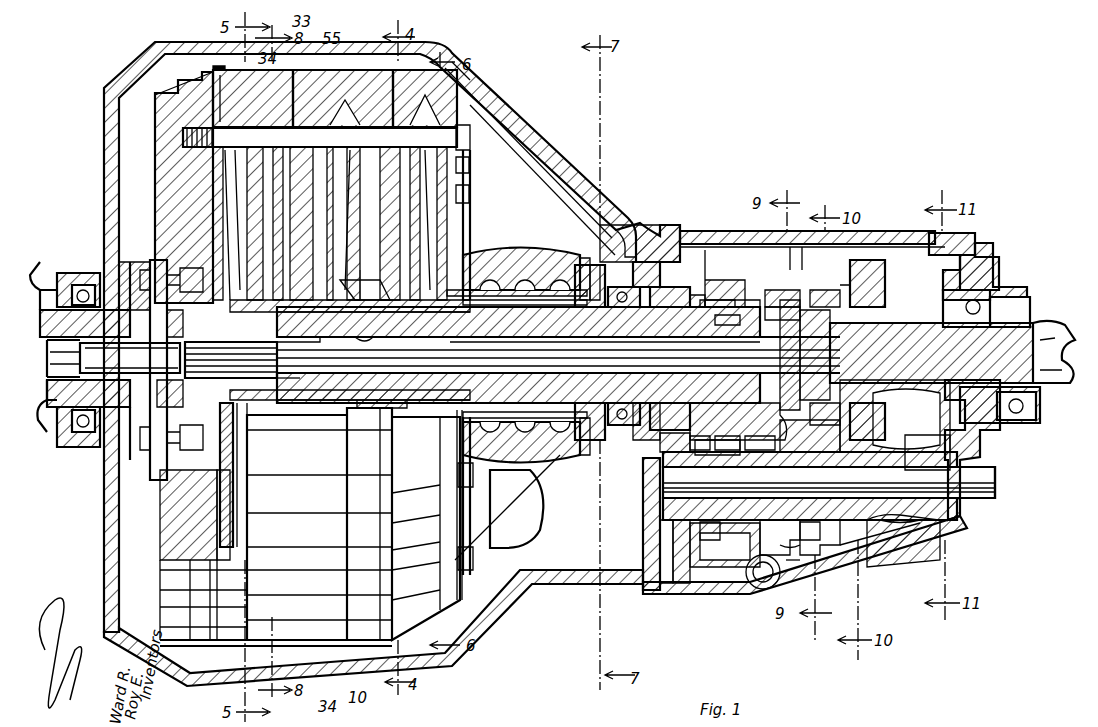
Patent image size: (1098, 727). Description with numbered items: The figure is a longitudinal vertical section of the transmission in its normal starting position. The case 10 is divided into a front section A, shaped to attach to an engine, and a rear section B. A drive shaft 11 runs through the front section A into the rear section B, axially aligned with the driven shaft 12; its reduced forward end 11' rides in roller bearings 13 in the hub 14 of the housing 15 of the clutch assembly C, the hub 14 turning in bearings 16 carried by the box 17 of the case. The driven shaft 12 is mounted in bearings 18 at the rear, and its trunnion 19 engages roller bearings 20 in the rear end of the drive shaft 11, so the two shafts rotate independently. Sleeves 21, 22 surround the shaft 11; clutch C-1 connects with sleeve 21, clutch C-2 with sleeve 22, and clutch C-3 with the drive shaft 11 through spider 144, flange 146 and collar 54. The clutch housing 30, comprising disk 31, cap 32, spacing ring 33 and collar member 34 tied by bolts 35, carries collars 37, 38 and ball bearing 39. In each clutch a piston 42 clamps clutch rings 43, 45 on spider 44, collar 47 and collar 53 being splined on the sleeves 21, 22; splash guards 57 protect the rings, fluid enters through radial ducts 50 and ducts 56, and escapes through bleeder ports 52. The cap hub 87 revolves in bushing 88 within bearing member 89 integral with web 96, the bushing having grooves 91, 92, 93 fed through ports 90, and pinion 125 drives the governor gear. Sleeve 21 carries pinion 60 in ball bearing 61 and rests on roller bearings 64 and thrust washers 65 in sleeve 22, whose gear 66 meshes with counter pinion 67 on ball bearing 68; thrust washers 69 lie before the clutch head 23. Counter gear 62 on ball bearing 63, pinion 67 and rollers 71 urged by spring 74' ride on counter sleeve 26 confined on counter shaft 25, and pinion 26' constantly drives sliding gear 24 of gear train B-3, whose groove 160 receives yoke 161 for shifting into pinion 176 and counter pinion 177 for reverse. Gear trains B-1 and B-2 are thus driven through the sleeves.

The case 10 is at (562, 154).
The front section A is at (512, 98).
The rear section B is at (690, 234).
The clutch assembly C is at (160, 520).
The drive shaft 11 is at (300, 409).
The reduced forward end of drive shaft 11' is at (113, 358).
The driven shaft 12 is at (918, 336).
The roller bearings 13 is at (154, 332).
The hub 14 is at (132, 284).
The housing 15 is at (162, 504).
The bearings 16 is at (82, 288).
The box 17 is at (54, 280).
The bearings 18 is at (1002, 291).
The trunnion 19 is at (790, 362).
The roller bearings 20 is at (850, 350).
The sleeve 21 is at (652, 386).
The sleeve 22 is at (426, 330).
The clutch head 23 is at (790, 347).
The sliding gear 24 is at (870, 294).
The counter shaft 25 is at (998, 489).
The counter sleeve 26 is at (829, 471).
The pinion 26' is at (880, 555).
The housing 30 is at (156, 176).
The front member or disk 31 is at (165, 115).
The rear member or cap 32 is at (470, 90).
The spacing ring 33 is at (342, 590).
The collar member 34 is at (350, 354).
The transverse bolts 35 is at (154, 147).
The collar 37 is at (314, 334).
The collar 38 is at (239, 225).
The ball bearing member 39 is at (290, 338).
The piston disk 42 is at (218, 224).
The clutch ring 43 is at (215, 195).
The spider 44 is at (332, 220).
The clutch ring 45 is at (215, 180).
The collar 47 is at (365, 288).
The radial ducts 50 is at (470, 209).
The bleeder ports 52 is at (218, 72).
The collar 53 is at (366, 347).
The collar 54 is at (198, 338).
The ducts 56 is at (266, 76).
The annular splash guards 57 is at (365, 276).
The pinion 60 is at (710, 300).
The ball bearing 61 is at (664, 288).
The counter gear 62 is at (715, 410).
The ball bearing member 63 is at (680, 527).
The roller bearings 64 is at (708, 330).
The end thrust washers 65 is at (722, 315).
The gear 66 is at (794, 301).
The counter pinion 67 is at (808, 568).
The ball bearing member 68 is at (804, 546).
The end thrust washers 69 is at (782, 304).
The rollers 71 is at (830, 550).
The spring 74' is at (717, 464).
The cylindrical hub 87 is at (555, 262).
The bushing 88 is at (500, 260).
The bearing member 89 is at (532, 244).
The ports 90 is at (585, 258).
The annular groove 91 is at (552, 440).
The annular groove 92 is at (525, 442).
The annular groove 93 is at (521, 447).
The transverse web 96 is at (524, 486).
The pinion 125 is at (595, 270).
The spider 144 is at (258, 456).
The flange 146 is at (240, 426).
The groove 160 is at (828, 297).
The yoke 161 is at (830, 415).
The pinion 176 is at (908, 520).
The counter pinion 177 is at (927, 439).
The gear train B-1 is at (708, 292).
The gear train B-2 is at (770, 284).
The gear train B-3 is at (870, 284).
The clutch C-1 is at (425, 99).
The clutch C-2 is at (341, 98).
The clutch C-3 is at (240, 98).